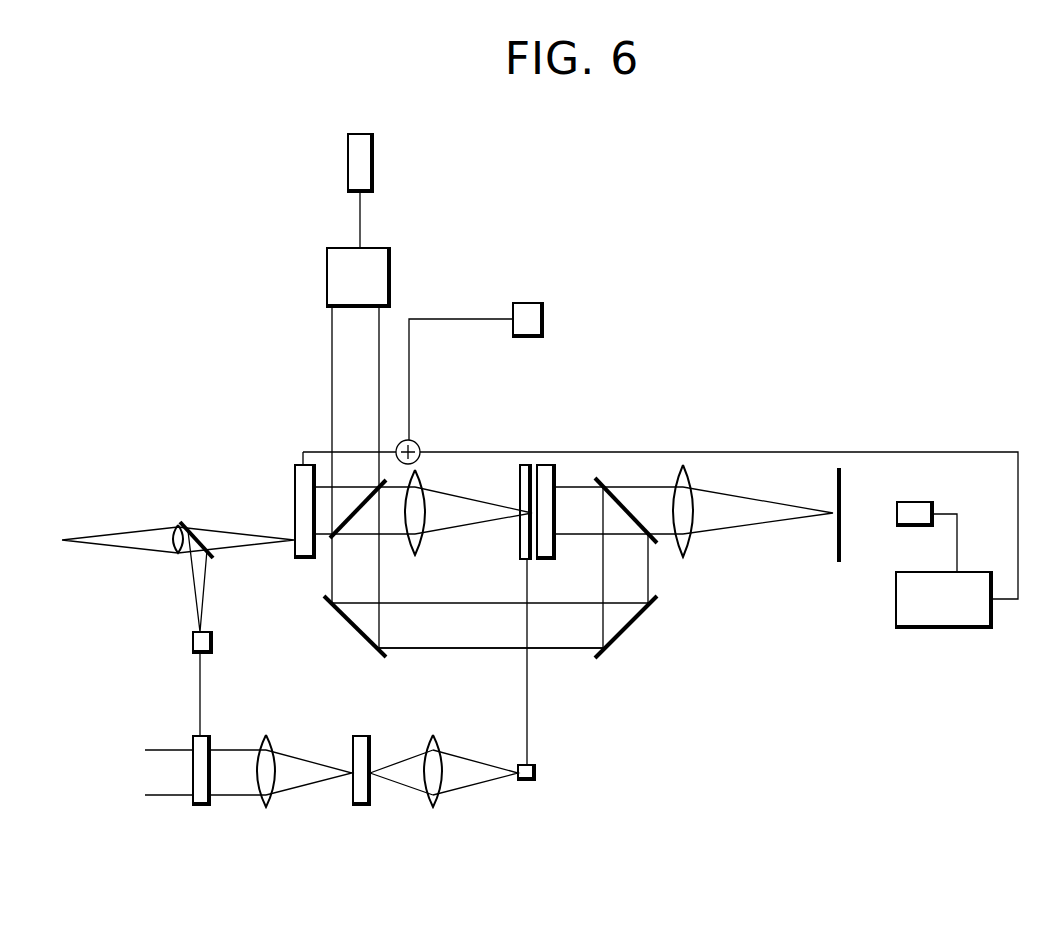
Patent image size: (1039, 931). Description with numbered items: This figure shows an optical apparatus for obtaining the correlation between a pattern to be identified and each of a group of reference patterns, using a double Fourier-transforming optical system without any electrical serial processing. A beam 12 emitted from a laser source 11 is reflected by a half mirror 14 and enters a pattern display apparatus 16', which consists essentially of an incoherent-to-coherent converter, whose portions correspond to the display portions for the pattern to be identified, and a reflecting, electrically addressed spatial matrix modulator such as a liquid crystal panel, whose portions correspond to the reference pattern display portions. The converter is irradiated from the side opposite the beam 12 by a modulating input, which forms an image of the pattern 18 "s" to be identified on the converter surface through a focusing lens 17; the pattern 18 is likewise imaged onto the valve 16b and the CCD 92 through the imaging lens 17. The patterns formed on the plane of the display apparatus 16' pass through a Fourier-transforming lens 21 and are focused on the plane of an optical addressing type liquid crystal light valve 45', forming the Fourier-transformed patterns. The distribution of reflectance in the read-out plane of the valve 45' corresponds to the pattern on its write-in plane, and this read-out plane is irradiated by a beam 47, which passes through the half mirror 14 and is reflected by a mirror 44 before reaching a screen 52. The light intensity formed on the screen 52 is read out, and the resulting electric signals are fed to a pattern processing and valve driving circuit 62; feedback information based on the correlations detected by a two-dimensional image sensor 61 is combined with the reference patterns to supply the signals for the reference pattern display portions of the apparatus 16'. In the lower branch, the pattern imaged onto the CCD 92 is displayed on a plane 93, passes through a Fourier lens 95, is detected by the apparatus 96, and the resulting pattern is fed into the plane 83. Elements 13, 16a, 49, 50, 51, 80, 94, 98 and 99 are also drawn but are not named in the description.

The laser source 11 is at (375, 160).
The beam 12 is at (361, 218).
The light source unit 13 is at (391, 276).
The half mirror 14 is at (330, 540).
The pattern display apparatus 16' is at (277, 485).
The first surface of plate 16a is at (295, 512).
The valve 16b is at (295, 555).
The focusing lens 17 is at (176, 553).
The pattern to be identified 18 is at (57, 527).
The Fourier-transforming lens 21 is at (421, 474).
The mirror 44 is at (352, 630).
The optical addressing type liquid crystal light valve 45' is at (567, 480).
The beam 47 is at (445, 648).
The mirror 49 is at (630, 628).
The beam splitter mirror 50 is at (600, 480).
The lens 51 is at (683, 470).
The screen 52 is at (841, 470).
The two dimensional image sensor 61 is at (915, 502).
The pattern processing and valve driving circuit 62 is at (935, 628).
The controller 80 is at (533, 303).
The plane 83 is at (520, 478).
The CCD 92 is at (193, 641).
The plane 93 is at (200, 806).
The incoming light beam 94 is at (160, 750).
The Fourier lens 95 is at (266, 738).
The detecting apparatus 96 is at (530, 781).
The lens 98 is at (436, 807).
The plate 99 is at (360, 806).